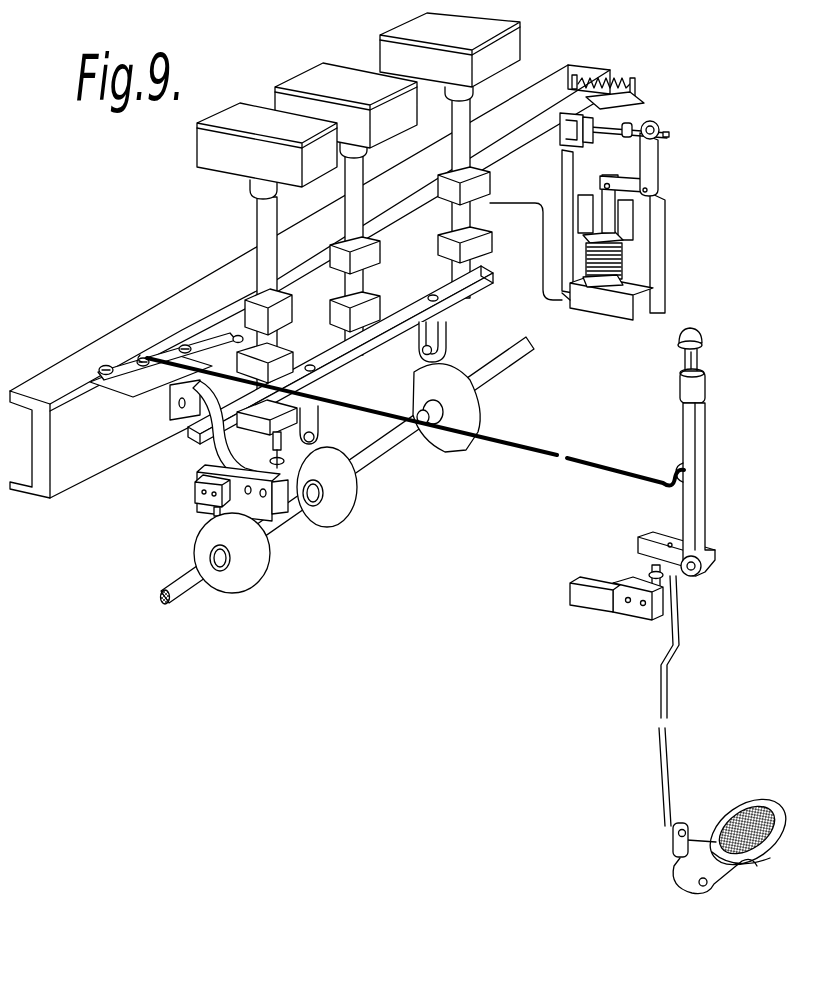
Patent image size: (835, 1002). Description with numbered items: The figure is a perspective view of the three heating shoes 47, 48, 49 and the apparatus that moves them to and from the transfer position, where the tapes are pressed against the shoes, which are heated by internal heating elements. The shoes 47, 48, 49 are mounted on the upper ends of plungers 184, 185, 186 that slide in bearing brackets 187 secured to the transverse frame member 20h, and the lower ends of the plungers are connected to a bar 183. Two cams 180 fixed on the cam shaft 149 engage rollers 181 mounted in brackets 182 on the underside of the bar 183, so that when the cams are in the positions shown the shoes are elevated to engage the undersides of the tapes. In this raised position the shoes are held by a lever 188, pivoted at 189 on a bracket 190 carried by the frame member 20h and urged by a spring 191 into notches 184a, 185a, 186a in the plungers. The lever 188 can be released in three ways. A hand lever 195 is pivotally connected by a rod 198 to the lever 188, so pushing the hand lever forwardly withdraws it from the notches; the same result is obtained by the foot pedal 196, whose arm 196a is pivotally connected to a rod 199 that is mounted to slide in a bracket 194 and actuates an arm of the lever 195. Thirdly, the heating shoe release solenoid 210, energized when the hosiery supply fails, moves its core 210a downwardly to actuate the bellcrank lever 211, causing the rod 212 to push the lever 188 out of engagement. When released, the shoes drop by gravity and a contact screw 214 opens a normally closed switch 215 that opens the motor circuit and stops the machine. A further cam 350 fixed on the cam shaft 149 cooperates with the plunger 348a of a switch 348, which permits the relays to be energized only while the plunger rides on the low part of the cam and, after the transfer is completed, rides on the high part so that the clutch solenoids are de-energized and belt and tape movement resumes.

The heating shoe 47 is at (240, 117).
The heating shoe 48 is at (320, 78).
The heating shoe 49 is at (410, 30).
The plunger 184 is at (262, 208).
The notch 184a is at (262, 278).
The plunger 185 is at (348, 193).
The notch 185a is at (363, 229).
The plunger 186 is at (458, 122).
The notch 186a is at (452, 182).
The bearing bracket 187 is at (285, 312).
The lever 188 is at (182, 326).
The pivot 189 is at (104, 365).
The bracket 190 is at (125, 388).
The transverse frame member 20h is at (80, 468).
The bar 183 is at (490, 278).
The bracket 182 is at (440, 342).
The roller 181 is at (447, 350).
The cam 180 is at (343, 510).
The rod 198 is at (543, 452).
The spring 191 is at (618, 80).
The rod 212 is at (670, 133).
The bellcrank lever 211 is at (655, 165).
The core 210a is at (608, 210).
The heating shoe release solenoid 210 is at (617, 262).
The contact screw 214 is at (274, 448).
The switch 215 is at (283, 513).
The switch 348 is at (193, 492).
The plunger 348a is at (213, 509).
The cam shaft 149 is at (190, 588).
The cam 350 is at (247, 583).
The hand lever 195 is at (692, 449).
The clamp bracket 194 is at (665, 603).
The rod 199 is at (664, 700).
The arm 196a is at (678, 850).
The foot pedal 196 is at (735, 858).